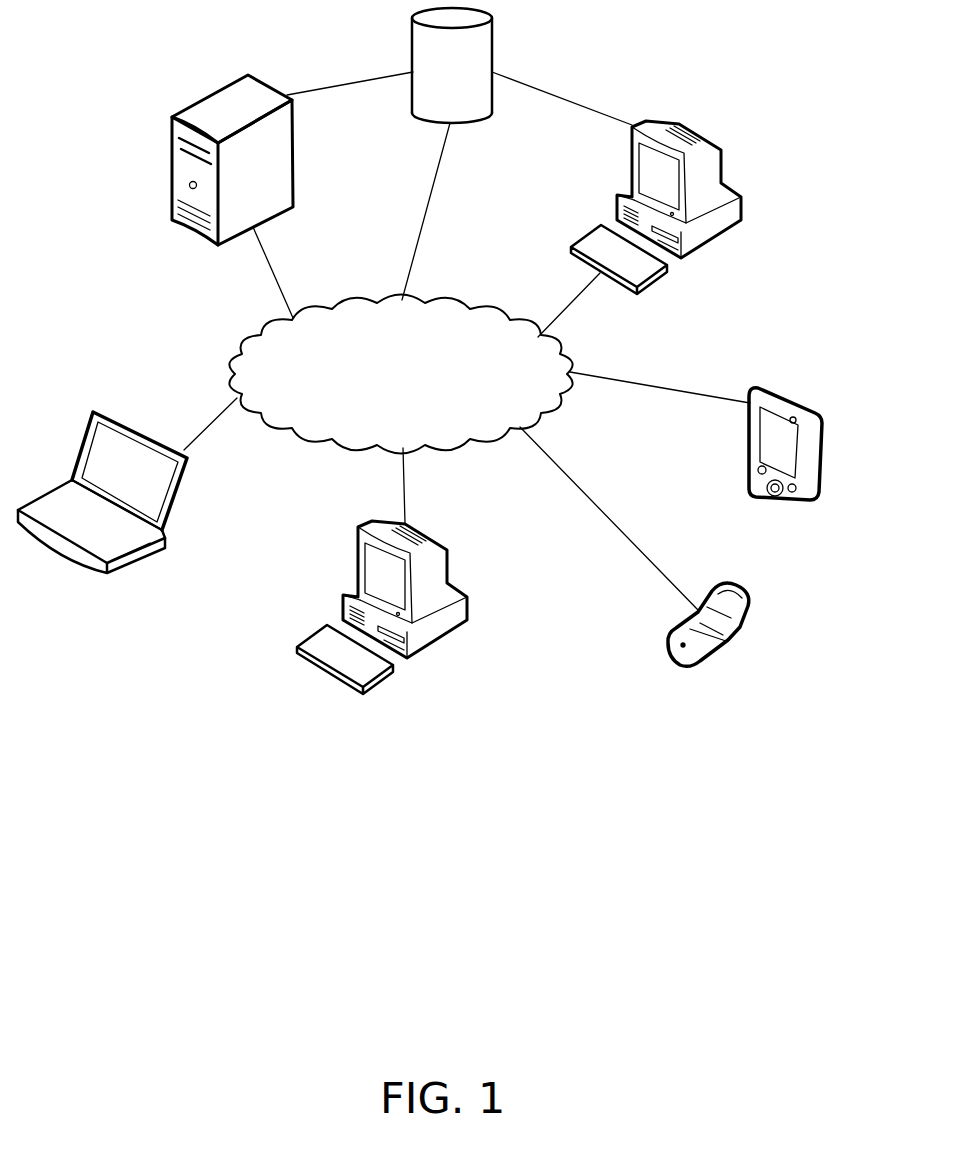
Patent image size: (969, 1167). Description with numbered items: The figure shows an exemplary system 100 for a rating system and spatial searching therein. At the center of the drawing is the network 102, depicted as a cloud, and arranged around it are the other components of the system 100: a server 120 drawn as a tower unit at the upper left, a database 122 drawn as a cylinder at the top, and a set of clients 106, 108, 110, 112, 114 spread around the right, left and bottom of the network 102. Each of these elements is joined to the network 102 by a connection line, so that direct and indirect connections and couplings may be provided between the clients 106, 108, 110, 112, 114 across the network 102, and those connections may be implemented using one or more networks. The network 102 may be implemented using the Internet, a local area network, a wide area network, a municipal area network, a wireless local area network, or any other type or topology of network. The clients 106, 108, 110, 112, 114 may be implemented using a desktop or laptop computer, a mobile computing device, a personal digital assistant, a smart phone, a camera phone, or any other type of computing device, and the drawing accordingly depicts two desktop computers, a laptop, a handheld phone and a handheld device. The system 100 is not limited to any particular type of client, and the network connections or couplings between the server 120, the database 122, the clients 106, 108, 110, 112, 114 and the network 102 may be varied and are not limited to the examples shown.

The system 100 is at (117, 806).
The network 102 is at (425, 419).
The client 106 is at (718, 144).
The client 108 is at (468, 598).
The client 110 is at (173, 517).
The client 112 is at (755, 603).
The client 114 is at (823, 453).
The server 120 is at (193, 106).
The database 122 is at (472, 80).